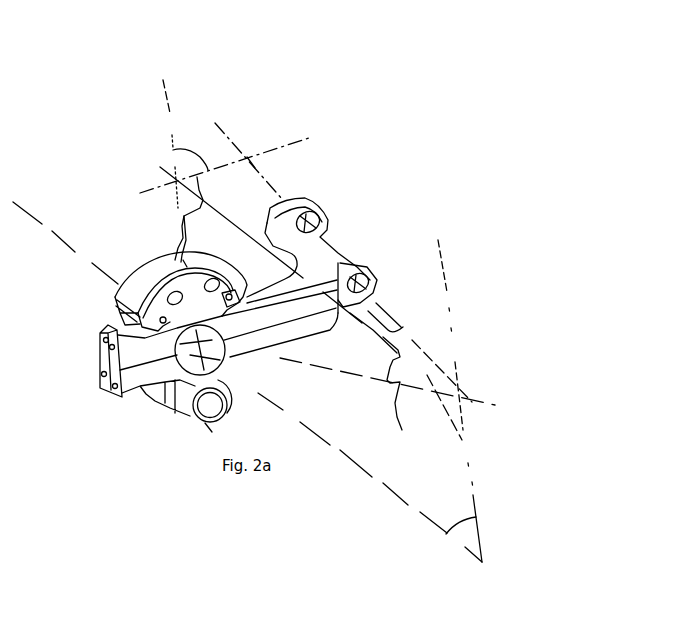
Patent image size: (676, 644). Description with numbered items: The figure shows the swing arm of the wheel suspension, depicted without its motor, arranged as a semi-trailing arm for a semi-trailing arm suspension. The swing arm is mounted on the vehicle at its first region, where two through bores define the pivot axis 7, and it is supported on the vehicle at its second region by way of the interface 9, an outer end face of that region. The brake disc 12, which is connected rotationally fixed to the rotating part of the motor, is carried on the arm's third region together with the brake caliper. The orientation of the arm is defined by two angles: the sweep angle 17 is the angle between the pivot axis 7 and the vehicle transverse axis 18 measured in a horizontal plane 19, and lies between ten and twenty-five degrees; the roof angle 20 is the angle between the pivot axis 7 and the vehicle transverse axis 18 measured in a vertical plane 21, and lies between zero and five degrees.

The pivot axis 7 is at (327, 240).
The interface 9 is at (100, 357).
The brake disc 12 is at (112, 313).
The sweep angle 17 is at (393, 333).
The vehicle transverse axis 18 is at (73, 238).
The horizontal plane 19 is at (216, 198).
The roof angle 20 is at (402, 430).
The vertical plane 21 is at (394, 468).